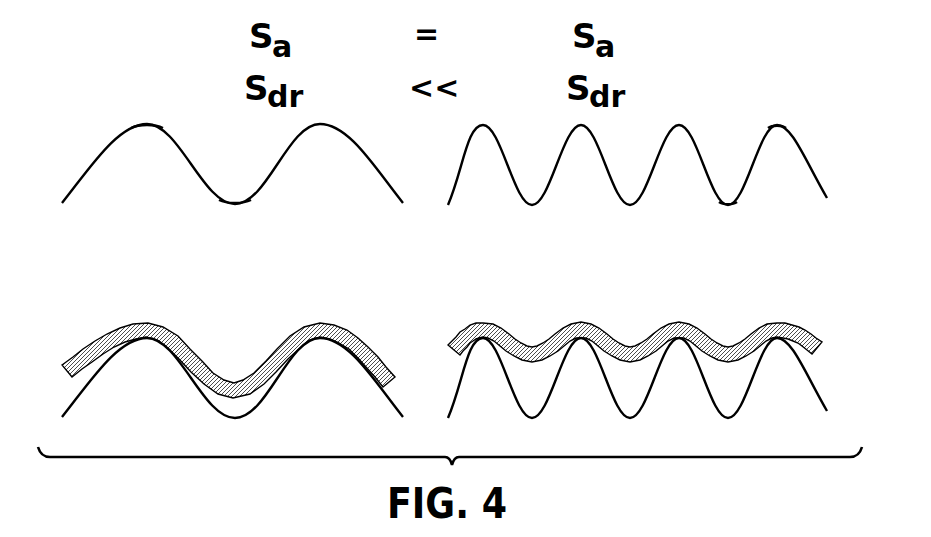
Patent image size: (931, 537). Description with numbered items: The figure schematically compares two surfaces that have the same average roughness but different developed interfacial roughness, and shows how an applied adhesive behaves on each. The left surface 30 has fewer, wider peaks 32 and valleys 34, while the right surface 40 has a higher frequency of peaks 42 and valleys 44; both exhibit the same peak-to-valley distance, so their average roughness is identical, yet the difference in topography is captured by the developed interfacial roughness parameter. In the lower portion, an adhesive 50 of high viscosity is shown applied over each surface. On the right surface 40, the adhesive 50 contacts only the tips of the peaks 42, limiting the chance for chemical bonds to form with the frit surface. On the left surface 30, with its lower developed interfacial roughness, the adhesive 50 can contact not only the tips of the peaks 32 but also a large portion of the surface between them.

The left surface 30 is at (99, 153).
The peaks 32 is at (147, 122).
The valleys 34 is at (236, 205).
The right surface 40 is at (810, 158).
The peaks 42 is at (776, 122).
The valleys 44 is at (729, 204).
The adhesive 50 is at (306, 322).